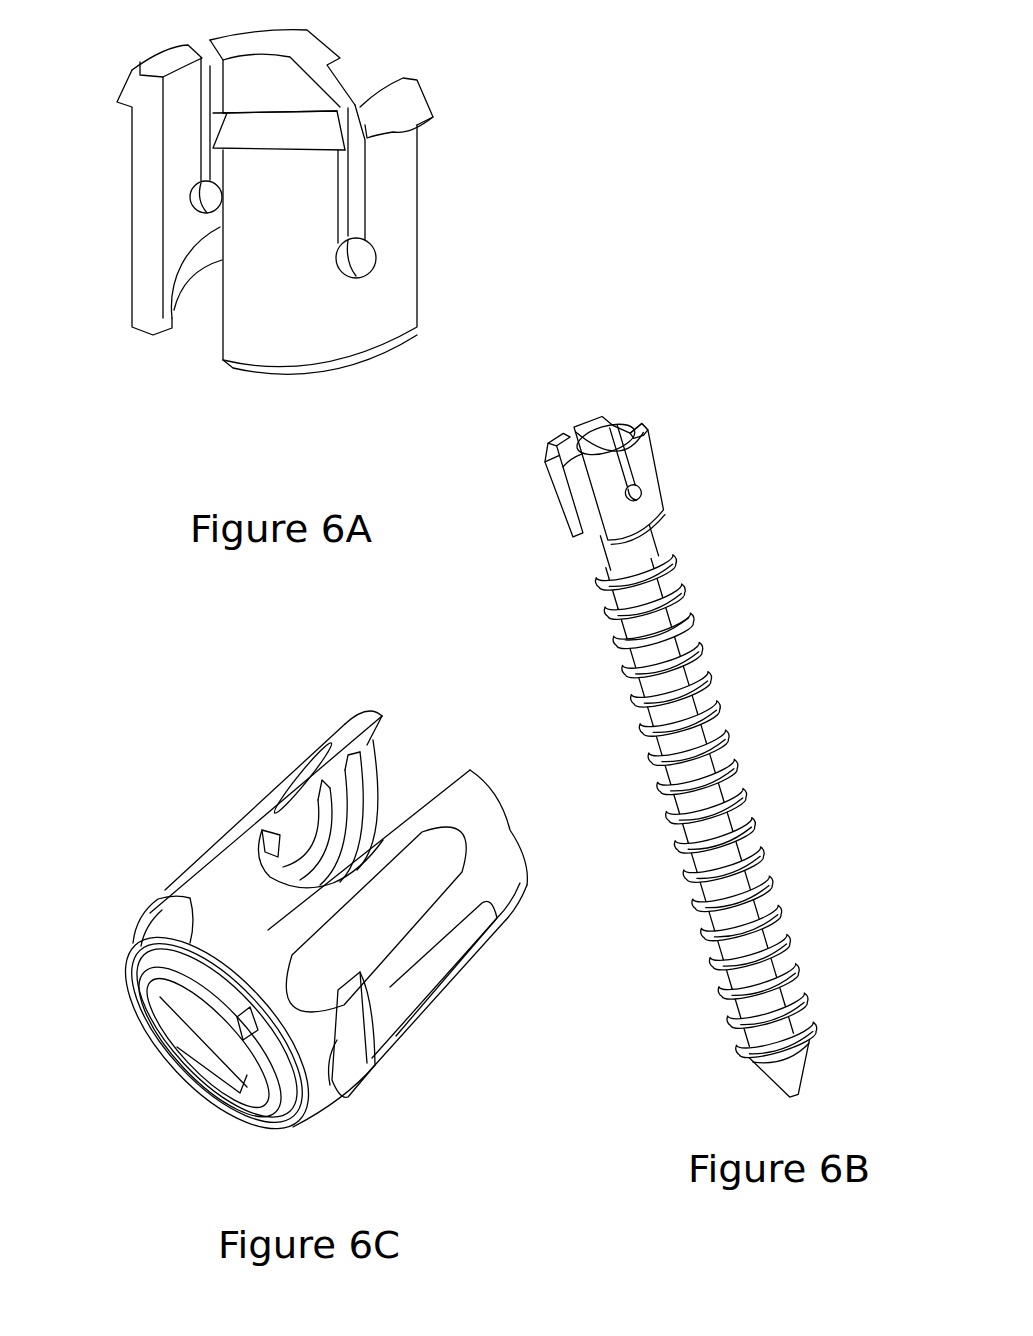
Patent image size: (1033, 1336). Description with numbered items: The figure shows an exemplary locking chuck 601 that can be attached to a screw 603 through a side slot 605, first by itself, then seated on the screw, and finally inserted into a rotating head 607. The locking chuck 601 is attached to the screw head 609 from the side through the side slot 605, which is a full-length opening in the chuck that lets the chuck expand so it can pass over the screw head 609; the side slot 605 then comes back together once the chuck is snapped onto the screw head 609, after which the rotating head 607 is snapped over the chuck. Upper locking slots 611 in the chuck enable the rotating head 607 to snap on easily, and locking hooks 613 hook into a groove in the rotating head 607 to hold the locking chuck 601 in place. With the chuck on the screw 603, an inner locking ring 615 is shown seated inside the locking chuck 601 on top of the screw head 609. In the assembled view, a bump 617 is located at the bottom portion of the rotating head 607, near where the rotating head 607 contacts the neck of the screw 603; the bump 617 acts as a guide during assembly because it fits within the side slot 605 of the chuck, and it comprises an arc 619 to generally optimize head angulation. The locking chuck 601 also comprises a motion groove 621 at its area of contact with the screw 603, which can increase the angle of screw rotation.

In FIG. 6A, the locking chuck 601 is at (373, 70).
In FIG. 6B, the locking chuck 601 is at (658, 492).
In FIG. 6C, the locking chuck 601 is at (155, 1015).
In FIG. 6B, the screw 603 is at (712, 652).
In FIG. 6A, the side slot 605 is at (200, 328).
In FIG. 6B, the side slot 605 is at (563, 450).
In FIG. 6C, the side slot 605 is at (180, 968).
In FIG. 6C, the rotating head 607 is at (276, 806).
In FIG. 6B, the screw head 609 is at (596, 528).
In FIG. 6A, the upper locking slots 611 is at (368, 243).
In FIG. 6A, the locking hooks 613 is at (387, 123).
In FIG. 6B, the inner locking ring 615 is at (582, 492).
In FIG. 6C, the bump 617 is at (197, 958).
In FIG. 6C, the arc 619 is at (230, 985).
In FIG. 6C, the motion groove 621 is at (210, 1080).